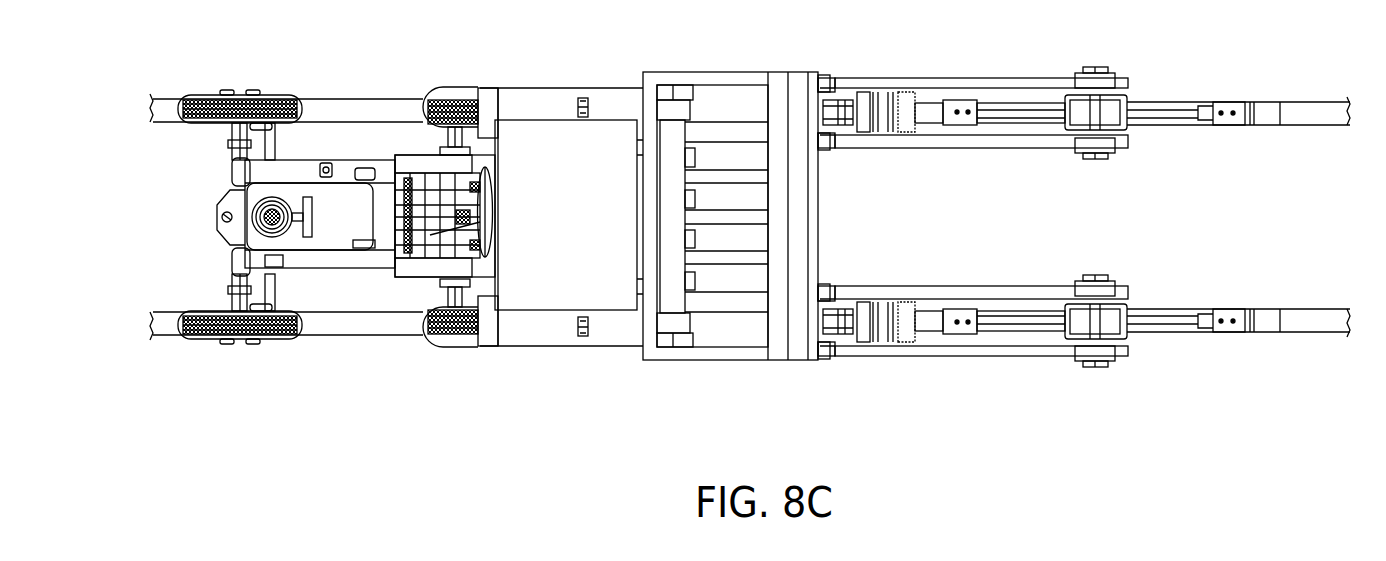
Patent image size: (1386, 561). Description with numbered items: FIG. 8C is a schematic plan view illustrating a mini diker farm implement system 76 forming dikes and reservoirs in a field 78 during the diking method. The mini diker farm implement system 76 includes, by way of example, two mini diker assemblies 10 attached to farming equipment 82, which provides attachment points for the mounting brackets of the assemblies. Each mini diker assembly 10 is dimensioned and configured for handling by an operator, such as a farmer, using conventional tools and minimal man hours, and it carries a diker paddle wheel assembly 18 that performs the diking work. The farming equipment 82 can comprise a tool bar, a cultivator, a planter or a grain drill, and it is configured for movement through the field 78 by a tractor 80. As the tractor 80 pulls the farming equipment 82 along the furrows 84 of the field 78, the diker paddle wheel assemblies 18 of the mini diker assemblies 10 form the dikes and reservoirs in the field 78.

The mini diker assembly 10 is at (878, 360).
The diker paddle wheel assembly 18 is at (905, 69).
The mini diker farm implement system 76 is at (736, 46).
The field 78 is at (1236, 92).
The tractor 80 is at (532, 101).
The farming equipment 82 is at (715, 362).
The furrows 84 is at (1313, 108).